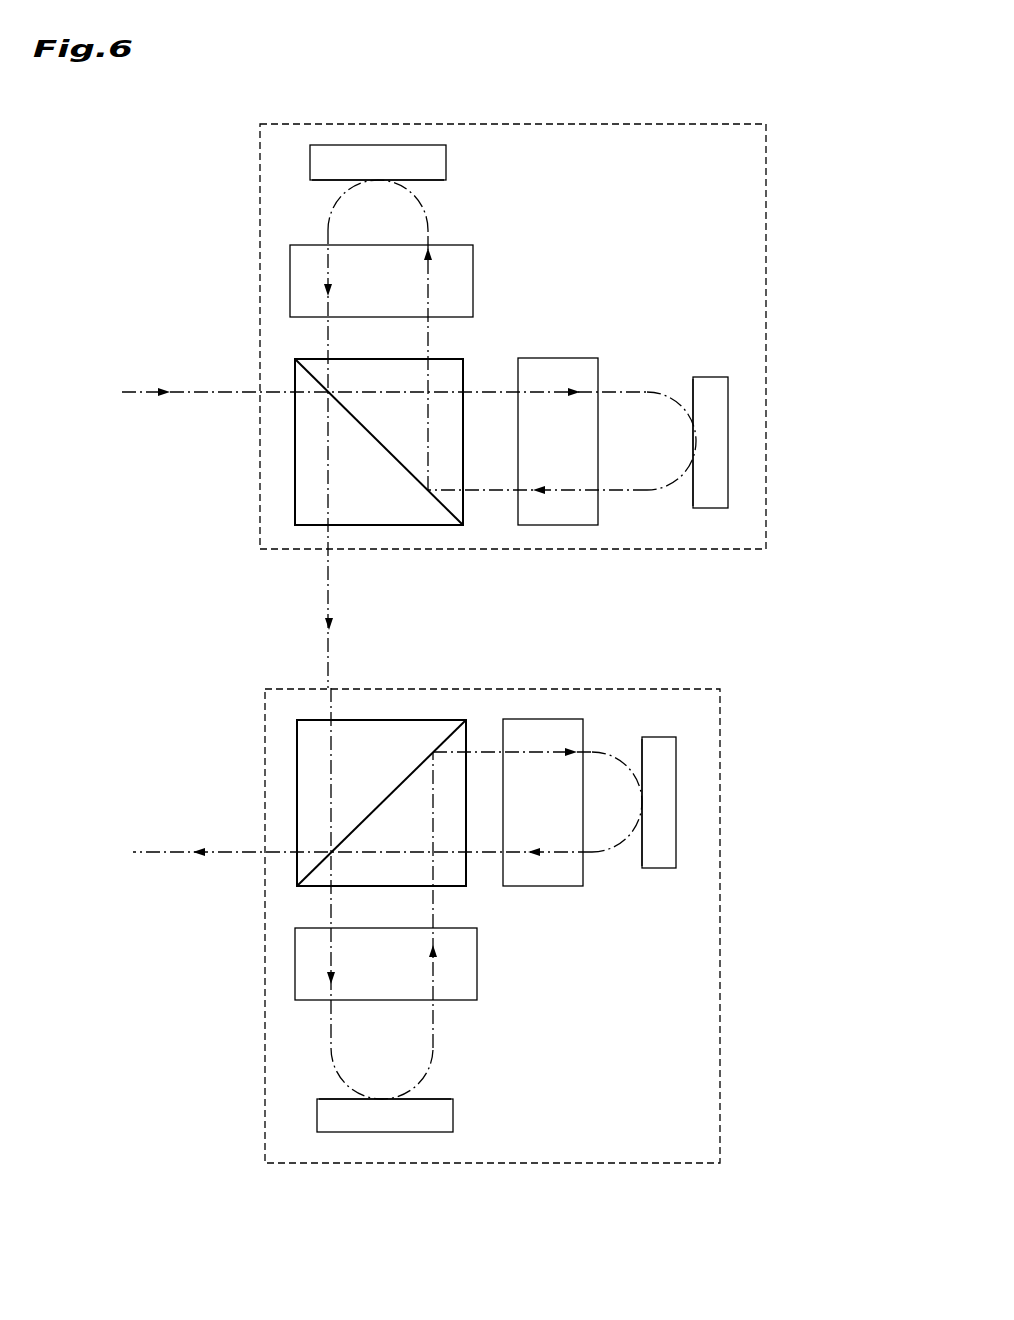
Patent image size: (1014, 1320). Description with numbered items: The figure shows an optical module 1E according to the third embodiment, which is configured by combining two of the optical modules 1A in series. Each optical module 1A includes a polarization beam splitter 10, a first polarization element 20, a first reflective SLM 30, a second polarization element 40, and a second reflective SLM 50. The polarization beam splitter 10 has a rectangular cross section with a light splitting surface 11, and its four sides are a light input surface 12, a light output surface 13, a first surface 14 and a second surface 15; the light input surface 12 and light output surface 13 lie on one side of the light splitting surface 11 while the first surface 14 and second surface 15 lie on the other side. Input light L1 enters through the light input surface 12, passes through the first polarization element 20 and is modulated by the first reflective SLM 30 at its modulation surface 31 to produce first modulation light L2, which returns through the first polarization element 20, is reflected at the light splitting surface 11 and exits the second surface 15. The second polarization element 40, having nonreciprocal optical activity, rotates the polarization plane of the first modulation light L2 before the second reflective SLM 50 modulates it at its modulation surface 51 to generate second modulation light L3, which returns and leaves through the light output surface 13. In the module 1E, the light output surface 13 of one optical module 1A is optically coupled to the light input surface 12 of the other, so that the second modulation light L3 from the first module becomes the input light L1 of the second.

The optical module 1E is at (203, 126).
The optical module 1A is at (640, 118).
The polarization beam splitter 10 is at (413, 540).
The light splitting surface 11 is at (375, 440).
The light input surface 12 is at (294, 484).
The light output surface 13 is at (308, 526).
The first surface 14 is at (465, 526).
The second surface 15 is at (437, 359).
The first polarization element 20 is at (560, 347).
The first reflective SLM 30 is at (708, 366).
The modulation surface 31 is at (692, 395).
The second polarization element 40 is at (486, 268).
The second reflective SLM 50 is at (378, 133).
The modulation surface 51 is at (441, 182).
The input light L1 is at (188, 395).
The first modulation light L2 is at (622, 491).
The second modulation light L3 is at (327, 232).